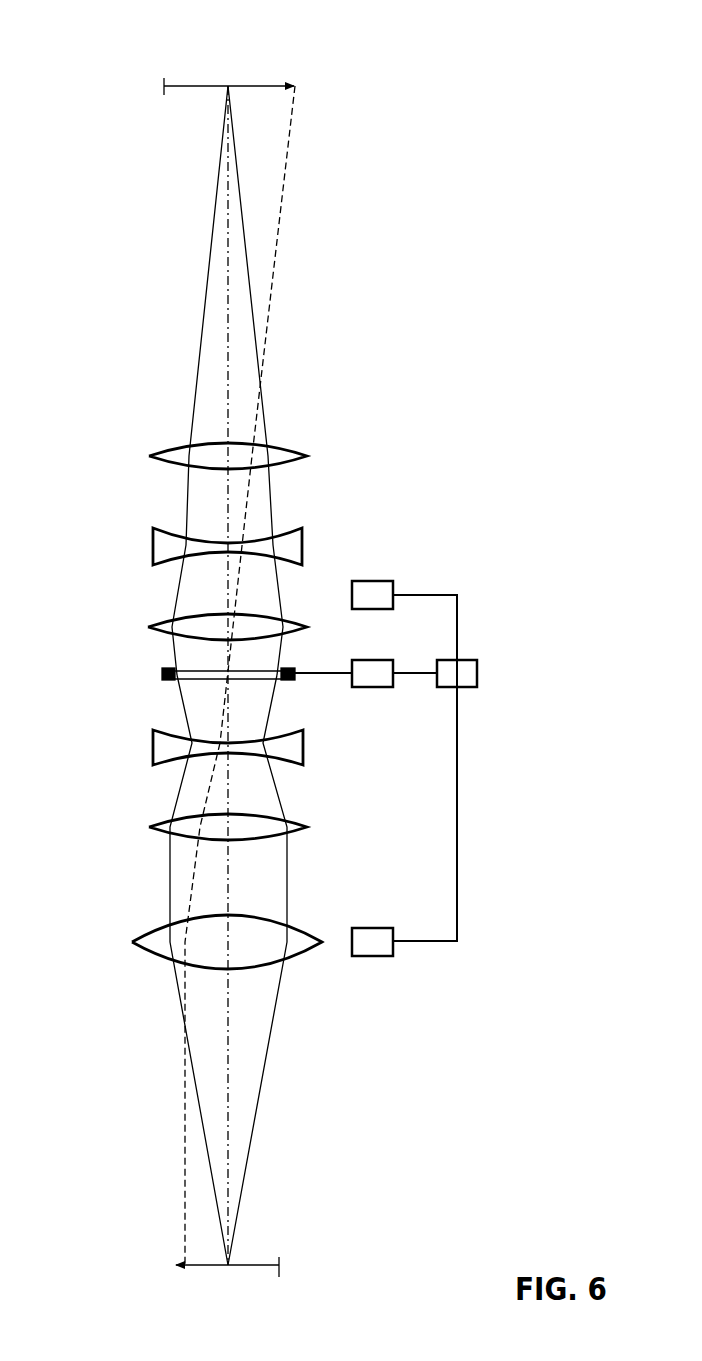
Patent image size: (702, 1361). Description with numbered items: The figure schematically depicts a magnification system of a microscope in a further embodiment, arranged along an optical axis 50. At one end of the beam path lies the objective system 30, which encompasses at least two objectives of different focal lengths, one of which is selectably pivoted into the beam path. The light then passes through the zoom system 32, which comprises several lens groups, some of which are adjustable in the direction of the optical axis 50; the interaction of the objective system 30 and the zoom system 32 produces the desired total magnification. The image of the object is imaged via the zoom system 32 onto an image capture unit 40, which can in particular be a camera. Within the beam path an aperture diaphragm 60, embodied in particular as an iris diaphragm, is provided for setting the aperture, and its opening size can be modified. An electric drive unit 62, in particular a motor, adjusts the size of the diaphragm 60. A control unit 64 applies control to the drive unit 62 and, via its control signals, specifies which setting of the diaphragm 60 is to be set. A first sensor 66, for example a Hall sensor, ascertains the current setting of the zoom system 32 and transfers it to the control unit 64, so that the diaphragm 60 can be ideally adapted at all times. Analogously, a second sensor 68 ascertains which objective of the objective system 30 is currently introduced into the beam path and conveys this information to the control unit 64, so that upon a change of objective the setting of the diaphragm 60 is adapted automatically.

The objective system 30 is at (127, 974).
The zoom system 32 is at (136, 385).
The image capture unit 40 is at (196, 85).
The optical axis 50 is at (230, 229).
The aperture diaphragm 60 is at (170, 668).
The electric drive unit 62 is at (371, 688).
The control unit 64 is at (478, 673).
The first sensor 66 is at (371, 580).
The second sensor 68 is at (371, 957).